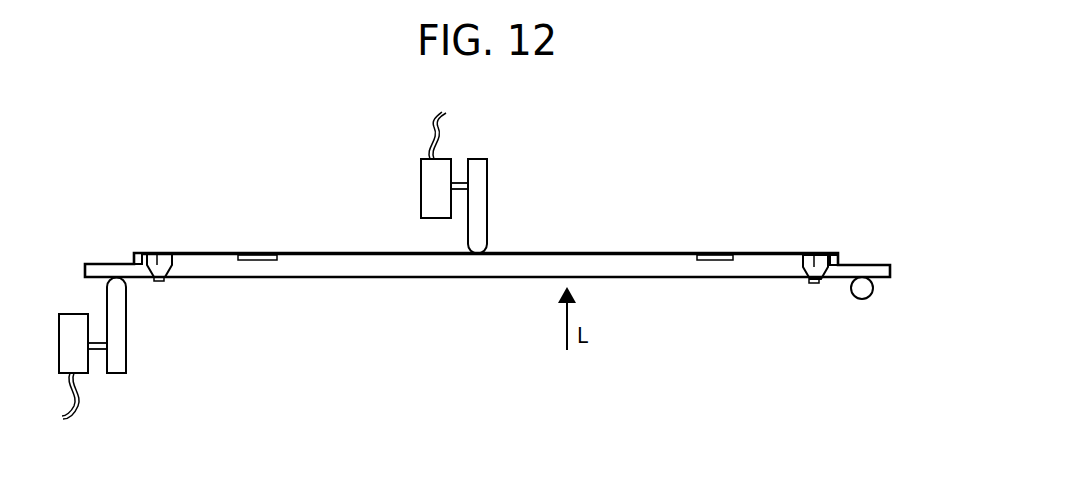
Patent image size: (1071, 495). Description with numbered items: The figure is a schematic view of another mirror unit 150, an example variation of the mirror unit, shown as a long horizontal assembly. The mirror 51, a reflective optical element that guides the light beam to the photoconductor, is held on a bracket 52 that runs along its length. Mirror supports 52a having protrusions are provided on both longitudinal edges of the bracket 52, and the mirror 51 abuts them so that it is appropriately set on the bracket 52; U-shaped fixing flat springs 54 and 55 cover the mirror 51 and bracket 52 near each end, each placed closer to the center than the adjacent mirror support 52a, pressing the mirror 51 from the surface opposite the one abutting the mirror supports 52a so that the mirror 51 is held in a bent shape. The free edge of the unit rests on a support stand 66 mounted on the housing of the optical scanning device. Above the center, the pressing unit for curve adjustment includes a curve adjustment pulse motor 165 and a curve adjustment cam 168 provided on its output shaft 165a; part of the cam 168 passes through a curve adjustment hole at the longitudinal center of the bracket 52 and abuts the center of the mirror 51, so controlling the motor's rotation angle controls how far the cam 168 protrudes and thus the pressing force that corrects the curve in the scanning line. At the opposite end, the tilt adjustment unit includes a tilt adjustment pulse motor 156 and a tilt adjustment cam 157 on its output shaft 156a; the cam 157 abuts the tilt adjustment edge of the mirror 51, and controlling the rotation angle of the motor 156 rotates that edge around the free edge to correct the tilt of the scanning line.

The mirror unit 150 is at (630, 135).
The mirror 51 is at (890, 272).
The bracket 52 is at (311, 260).
The mirror supports 52a is at (136, 255).
The fixing flat spring 54 is at (160, 254).
The fixing flat spring 55 is at (815, 255).
The support stand 66 is at (862, 300).
The tilt adjustment pulse motor 156 is at (72, 314).
The output shaft 156a is at (99, 350).
The tilt adjustment cam 157 is at (126, 328).
The curve adjustment pulse motor 165 is at (421, 180).
The output shaft 165a is at (460, 183).
The curve adjustment cam 168 is at (488, 200).